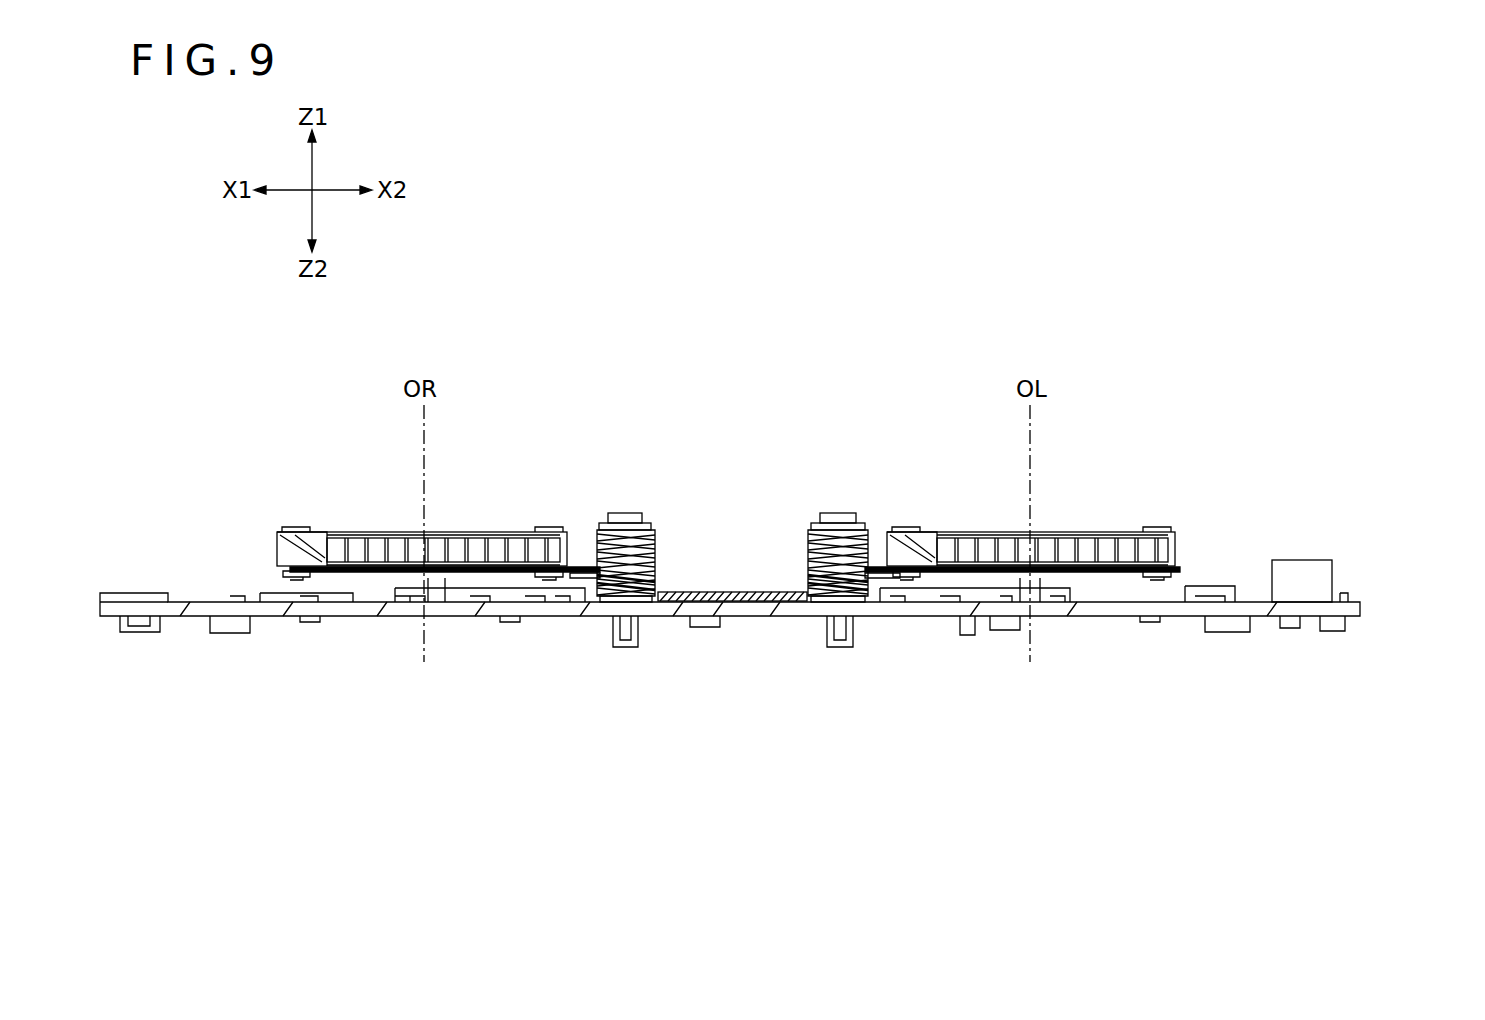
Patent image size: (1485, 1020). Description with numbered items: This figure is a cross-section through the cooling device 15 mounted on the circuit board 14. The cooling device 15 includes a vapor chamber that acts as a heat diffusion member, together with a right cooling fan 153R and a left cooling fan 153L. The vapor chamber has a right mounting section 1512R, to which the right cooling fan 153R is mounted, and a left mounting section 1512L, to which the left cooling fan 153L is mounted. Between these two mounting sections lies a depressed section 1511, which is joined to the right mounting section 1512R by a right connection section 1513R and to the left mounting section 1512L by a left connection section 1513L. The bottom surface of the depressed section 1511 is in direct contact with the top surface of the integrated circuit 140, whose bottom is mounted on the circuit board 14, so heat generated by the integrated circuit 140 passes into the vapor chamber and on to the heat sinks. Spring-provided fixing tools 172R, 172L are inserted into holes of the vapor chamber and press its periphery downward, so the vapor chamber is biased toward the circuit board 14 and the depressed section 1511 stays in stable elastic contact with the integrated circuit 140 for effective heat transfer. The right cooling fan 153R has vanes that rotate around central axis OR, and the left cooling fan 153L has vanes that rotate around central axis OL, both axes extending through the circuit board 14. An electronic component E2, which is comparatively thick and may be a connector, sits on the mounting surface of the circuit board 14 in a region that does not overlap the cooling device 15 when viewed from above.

The circuit board 14 is at (1362, 607).
The cooling device 15 is at (1082, 532).
The integrated circuit 140 is at (713, 607).
The depressed section 1511 is at (733, 590).
The right mounting section 1512R is at (373, 575).
The left mounting section 1512L is at (1128, 575).
The right connection section 1513R is at (597, 540).
The left connection section 1513L is at (872, 530).
The right cooling fan 153R is at (392, 530).
The left cooling fan 153L is at (1130, 530).
The fixing tool 172R is at (658, 532).
The fixing tool 172L is at (797, 537).
The electronic component E2 is at (1303, 572).